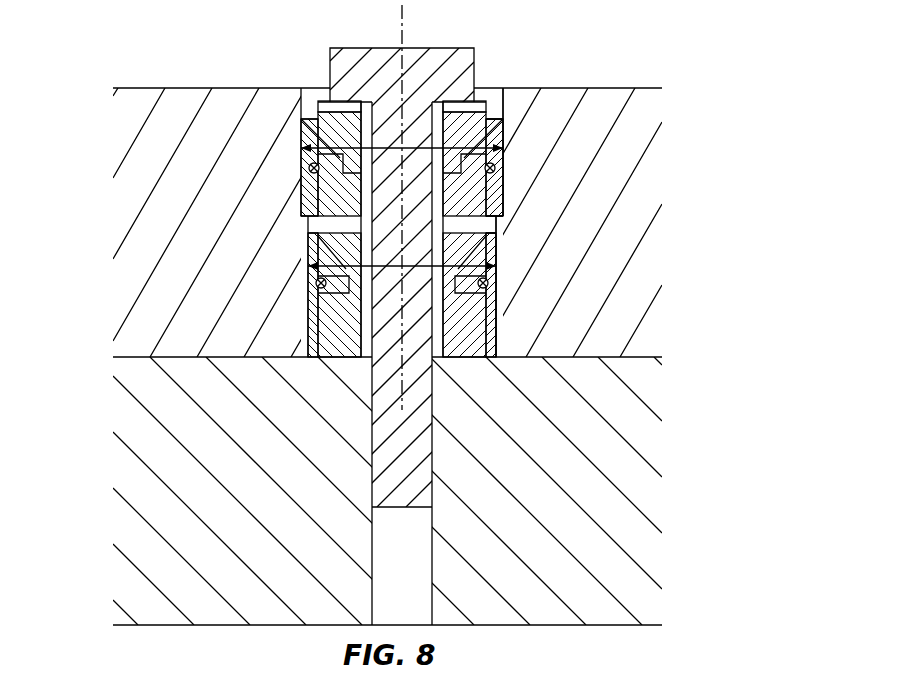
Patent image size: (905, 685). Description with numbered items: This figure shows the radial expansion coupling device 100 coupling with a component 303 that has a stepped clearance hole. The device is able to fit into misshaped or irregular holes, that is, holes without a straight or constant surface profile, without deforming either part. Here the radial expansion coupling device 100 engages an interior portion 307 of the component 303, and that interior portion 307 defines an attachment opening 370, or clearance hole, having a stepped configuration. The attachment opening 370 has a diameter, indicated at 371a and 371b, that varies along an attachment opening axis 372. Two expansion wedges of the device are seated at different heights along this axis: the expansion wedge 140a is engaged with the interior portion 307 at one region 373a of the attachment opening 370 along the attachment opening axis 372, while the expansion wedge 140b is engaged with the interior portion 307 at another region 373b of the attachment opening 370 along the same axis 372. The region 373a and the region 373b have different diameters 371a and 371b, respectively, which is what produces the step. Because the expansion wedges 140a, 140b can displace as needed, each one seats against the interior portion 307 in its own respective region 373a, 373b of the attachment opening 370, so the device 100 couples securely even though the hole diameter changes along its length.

The radial expansion coupling device 100 is at (410, 58).
The component 303 is at (231, 87).
The interior portion 307 is at (500, 108).
The attachment opening 370 is at (313, 72).
The attachment opening axis 372 is at (399, 26).
The diameter 371a is at (447, 148).
The diameter 371b is at (445, 266).
The region 373a is at (290, 152).
The region 373b is at (290, 271).
The expansion wedge 140a is at (302, 188).
The expansion wedge 140b is at (307, 313).